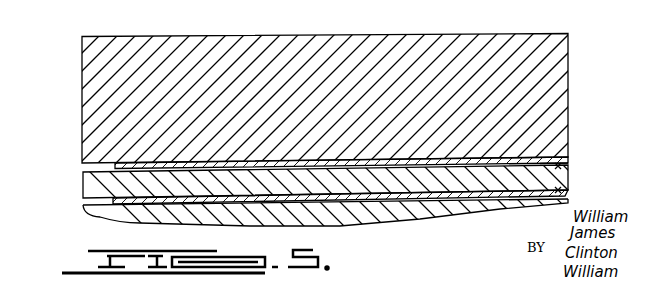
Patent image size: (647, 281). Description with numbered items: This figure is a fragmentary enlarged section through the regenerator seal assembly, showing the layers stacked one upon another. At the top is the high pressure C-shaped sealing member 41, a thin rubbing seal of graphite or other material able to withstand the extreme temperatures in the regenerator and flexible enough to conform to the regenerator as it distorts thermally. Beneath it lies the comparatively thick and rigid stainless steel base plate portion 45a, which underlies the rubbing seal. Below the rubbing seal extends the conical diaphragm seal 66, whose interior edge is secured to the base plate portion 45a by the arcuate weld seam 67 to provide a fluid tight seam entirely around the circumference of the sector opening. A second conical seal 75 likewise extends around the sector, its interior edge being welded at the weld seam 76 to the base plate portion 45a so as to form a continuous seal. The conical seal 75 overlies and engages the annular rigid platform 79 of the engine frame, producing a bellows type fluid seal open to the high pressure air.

The high pressure C-shaped sealing member 41 is at (543, 62).
The conical diaphragm seal 66 is at (193, 162).
The arcuate weld seam 67 is at (560, 155).
The semi-circular base plate portion 45a is at (83, 181).
The weld seam 76 is at (566, 193).
The conical seal 75 is at (430, 198).
The annular rigid platform 79 is at (102, 217).